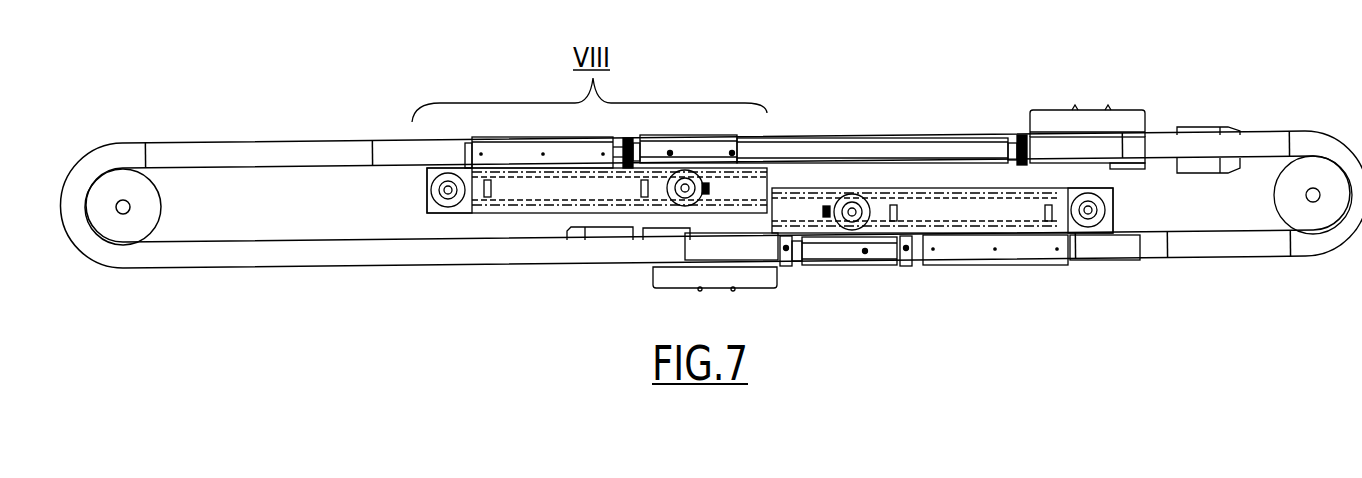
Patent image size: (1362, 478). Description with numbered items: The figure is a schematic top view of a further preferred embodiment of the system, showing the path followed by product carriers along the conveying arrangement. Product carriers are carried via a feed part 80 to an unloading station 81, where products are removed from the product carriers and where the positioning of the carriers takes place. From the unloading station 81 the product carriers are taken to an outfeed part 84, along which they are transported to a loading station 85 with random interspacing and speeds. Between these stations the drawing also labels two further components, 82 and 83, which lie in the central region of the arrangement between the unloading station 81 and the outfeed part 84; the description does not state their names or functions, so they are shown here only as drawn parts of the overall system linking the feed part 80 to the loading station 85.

The feed part 80 is at (290, 136).
The unloading station 81 is at (526, 134).
The carriage plate 82 is at (536, 216).
The actuator rod 83 is at (874, 138).
The outfeed part 84 is at (1264, 131).
The loading station 85 is at (964, 270).